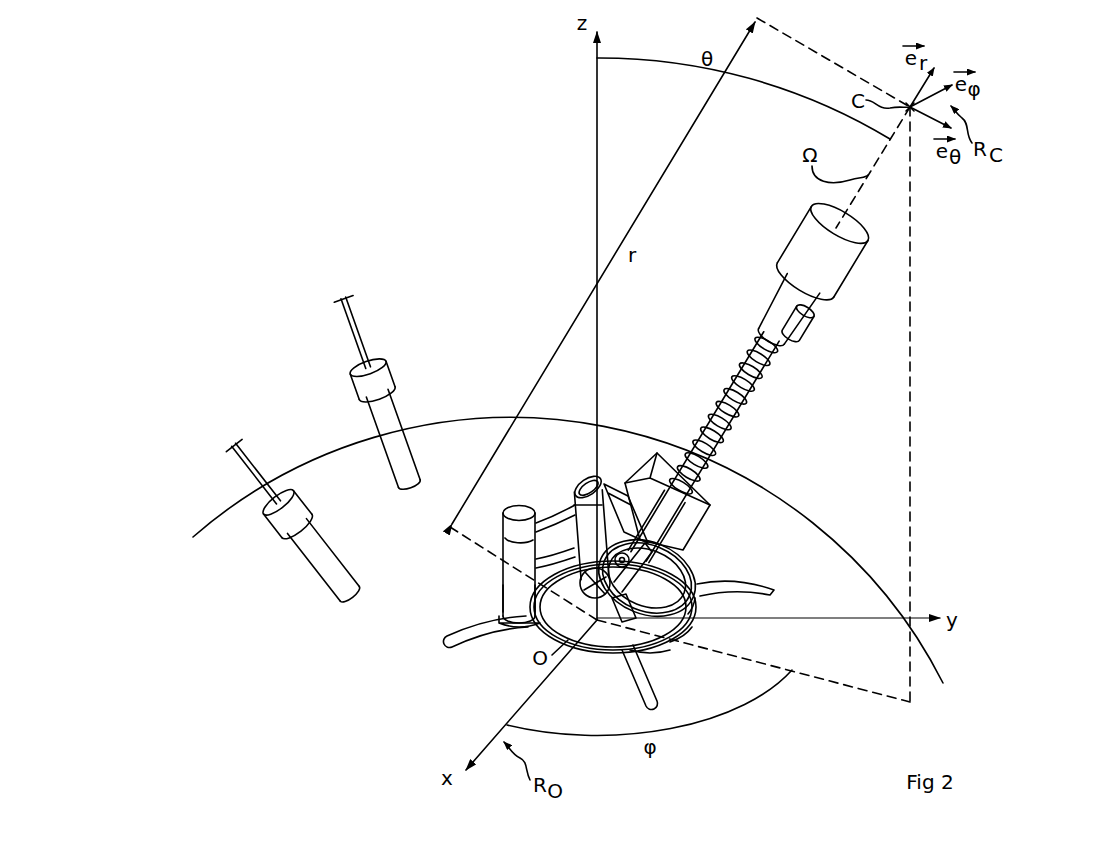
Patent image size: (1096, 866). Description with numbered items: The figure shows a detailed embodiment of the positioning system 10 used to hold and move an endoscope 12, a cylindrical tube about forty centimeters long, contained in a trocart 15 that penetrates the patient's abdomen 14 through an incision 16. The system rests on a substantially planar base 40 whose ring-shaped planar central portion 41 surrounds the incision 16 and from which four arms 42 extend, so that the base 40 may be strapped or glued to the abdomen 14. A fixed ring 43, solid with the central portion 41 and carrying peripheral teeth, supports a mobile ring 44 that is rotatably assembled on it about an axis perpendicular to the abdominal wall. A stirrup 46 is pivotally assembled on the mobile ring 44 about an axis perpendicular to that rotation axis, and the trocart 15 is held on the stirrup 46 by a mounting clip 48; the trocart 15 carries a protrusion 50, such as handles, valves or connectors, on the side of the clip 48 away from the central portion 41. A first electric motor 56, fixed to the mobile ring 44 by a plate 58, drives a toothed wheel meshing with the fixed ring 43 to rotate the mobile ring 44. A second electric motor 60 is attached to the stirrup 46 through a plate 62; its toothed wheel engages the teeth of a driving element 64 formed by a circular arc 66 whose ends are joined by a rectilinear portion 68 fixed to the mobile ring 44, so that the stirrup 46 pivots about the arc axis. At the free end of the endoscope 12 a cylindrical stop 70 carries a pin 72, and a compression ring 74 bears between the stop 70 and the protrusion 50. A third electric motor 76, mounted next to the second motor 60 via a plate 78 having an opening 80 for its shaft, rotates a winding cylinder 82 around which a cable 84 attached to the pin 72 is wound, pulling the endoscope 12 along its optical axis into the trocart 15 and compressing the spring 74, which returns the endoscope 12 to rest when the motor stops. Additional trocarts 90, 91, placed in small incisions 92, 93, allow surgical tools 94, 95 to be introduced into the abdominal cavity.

The positioning system 10 is at (672, 378).
The endoscope 12 is at (724, 414).
The abdomen 14 is at (840, 556).
The trocart 15 is at (521, 598).
The incision 16 is at (609, 652).
The base 40 is at (581, 655).
The ring-shaped planar central portion 41 is at (648, 651).
The arms 42 is at (454, 638).
The fixed ring 43 is at (676, 637).
The mobile ring 44 is at (691, 619).
The stirrup 46 is at (635, 608).
The mounting clip 48 is at (642, 569).
The protrusion 50 is at (690, 515).
The first electric motor 56 is at (503, 531).
The plate 58 is at (522, 625).
The second electric motor 60 is at (584, 486).
The plate 62 is at (562, 522).
The driving element 64 is at (614, 487).
The circular arc 66 is at (545, 517).
The rectilinear portion 68 is at (540, 566).
The cylindrical stop 70 is at (790, 255).
The pin 72 is at (806, 340).
The compression ring 74 is at (716, 440).
The third electric motor 76 is at (586, 484).
The plate 78 is at (646, 578).
The opening 80 is at (672, 565).
The winding cylinder 82 is at (588, 575).
The cable 84 is at (776, 344).
The additional trocart 90 is at (320, 550).
The additional trocart 91 is at (384, 420).
The incision 92 is at (352, 602).
The incision 93 is at (404, 488).
The surgical tool 94 is at (252, 460).
The surgical tool 95 is at (356, 318).